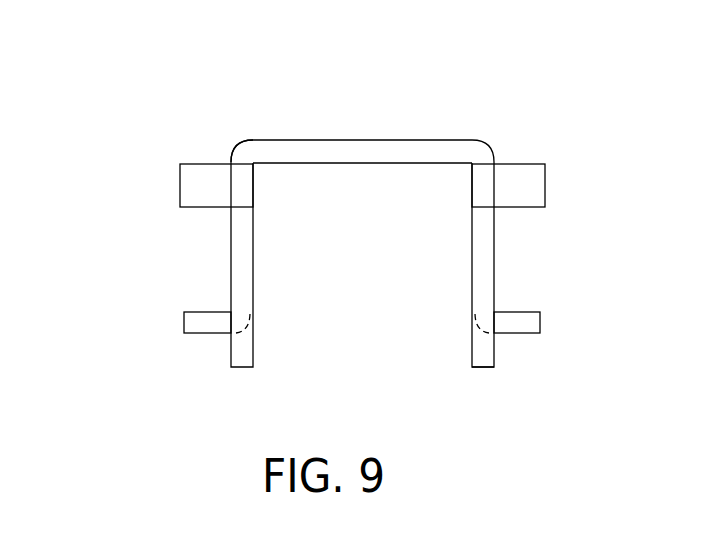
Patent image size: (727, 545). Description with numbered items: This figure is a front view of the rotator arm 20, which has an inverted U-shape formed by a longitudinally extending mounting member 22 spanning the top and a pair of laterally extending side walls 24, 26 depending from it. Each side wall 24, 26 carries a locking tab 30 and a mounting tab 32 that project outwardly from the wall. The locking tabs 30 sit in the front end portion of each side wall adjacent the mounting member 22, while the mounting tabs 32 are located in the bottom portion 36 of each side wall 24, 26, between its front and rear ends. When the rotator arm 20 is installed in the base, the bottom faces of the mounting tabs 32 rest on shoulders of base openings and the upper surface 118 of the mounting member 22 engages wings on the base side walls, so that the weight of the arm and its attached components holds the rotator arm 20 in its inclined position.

The rotator arm 20 is at (299, 229).
The mounting member 22 is at (345, 140).
The side wall 24 is at (253, 241).
The side wall 26 is at (472, 251).
The locking tab 30 is at (190, 185).
The mounting tab 32 is at (194, 325).
The bottom portion 36 is at (494, 353).
The upper surface 118 is at (262, 140).